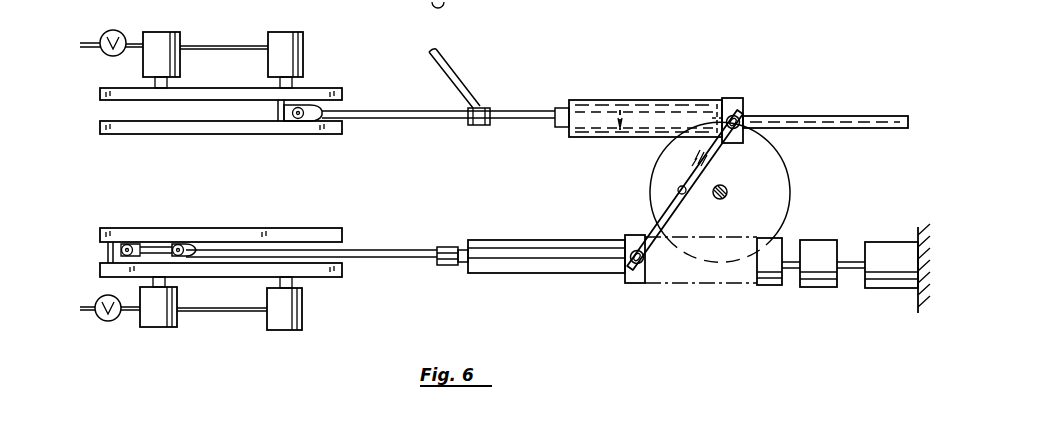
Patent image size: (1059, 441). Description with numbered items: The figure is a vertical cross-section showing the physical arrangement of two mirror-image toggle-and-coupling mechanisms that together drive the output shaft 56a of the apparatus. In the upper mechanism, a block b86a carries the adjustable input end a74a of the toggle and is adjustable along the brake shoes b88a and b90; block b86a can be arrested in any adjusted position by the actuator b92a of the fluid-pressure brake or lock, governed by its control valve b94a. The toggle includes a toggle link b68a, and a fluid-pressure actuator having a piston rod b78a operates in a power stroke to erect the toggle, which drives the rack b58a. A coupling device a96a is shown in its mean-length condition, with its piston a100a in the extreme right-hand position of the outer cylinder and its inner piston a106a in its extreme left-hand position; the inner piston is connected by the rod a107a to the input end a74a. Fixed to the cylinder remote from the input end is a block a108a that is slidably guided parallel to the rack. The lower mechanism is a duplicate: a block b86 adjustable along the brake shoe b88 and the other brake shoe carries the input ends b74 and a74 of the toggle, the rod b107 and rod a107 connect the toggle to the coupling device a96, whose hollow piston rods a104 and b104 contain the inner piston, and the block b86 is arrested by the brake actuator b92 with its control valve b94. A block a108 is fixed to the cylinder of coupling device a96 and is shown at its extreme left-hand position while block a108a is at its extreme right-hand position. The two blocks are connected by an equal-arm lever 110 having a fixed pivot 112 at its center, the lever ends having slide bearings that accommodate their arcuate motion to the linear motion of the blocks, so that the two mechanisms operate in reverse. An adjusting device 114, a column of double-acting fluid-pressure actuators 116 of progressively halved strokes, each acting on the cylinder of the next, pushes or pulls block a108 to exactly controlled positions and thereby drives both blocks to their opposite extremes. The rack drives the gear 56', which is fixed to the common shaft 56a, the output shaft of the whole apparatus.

The control valve b94a is at (100, 32).
The actuator of the fluid-pressure brake or lock b92a is at (270, 40).
The brake shoe b90 is at (246, 92).
The brake shoe b88a is at (232, 110).
The block b86a is at (285, 122).
The input end of the toggle a74a is at (298, 122).
The rod a107a is at (428, 96).
The piston rod b78a is at (452, 76).
The toggle link b68a is at (488, 108).
The coupling device a96a is at (651, 92).
The piston a106a is at (615, 136).
The piston a100a is at (737, 80).
The block a108a is at (744, 108).
The rack b58a is at (899, 114).
The gear 56' is at (744, 192).
The shaft 56a is at (728, 192).
The equal-arm lever 110 is at (696, 158).
The fixed pivot 112 is at (678, 191).
The block a108 is at (638, 284).
The coupling device a96 is at (511, 281).
The piston rod a104 is at (460, 266).
The piston rod b104 is at (446, 246).
The rod a107 is at (414, 232).
The adjusting device 114 is at (903, 296).
The double-acting fluid-pressure actuators 116 is at (870, 242).
The brake shoe b88 is at (300, 212).
The block b86 is at (108, 252).
The input end of the toggle b74 is at (138, 218).
The rod b107 is at (163, 247).
The input end of the toggle a74 is at (183, 244).
The actuator of the fluid-pressure brake or lock b92 is at (240, 322).
The control valve b94 is at (98, 320).